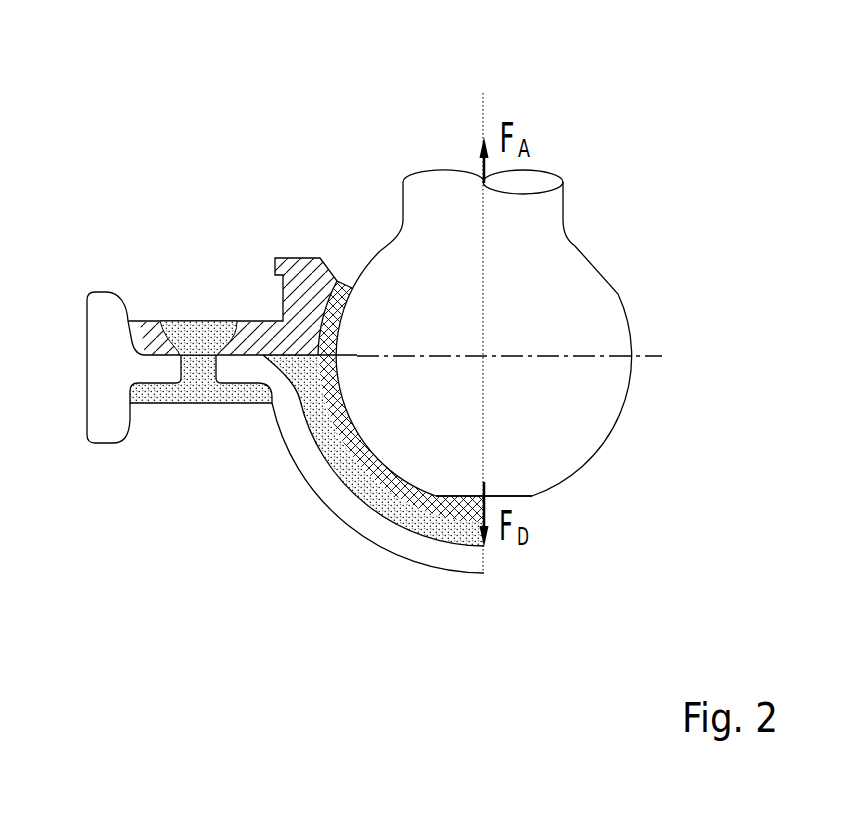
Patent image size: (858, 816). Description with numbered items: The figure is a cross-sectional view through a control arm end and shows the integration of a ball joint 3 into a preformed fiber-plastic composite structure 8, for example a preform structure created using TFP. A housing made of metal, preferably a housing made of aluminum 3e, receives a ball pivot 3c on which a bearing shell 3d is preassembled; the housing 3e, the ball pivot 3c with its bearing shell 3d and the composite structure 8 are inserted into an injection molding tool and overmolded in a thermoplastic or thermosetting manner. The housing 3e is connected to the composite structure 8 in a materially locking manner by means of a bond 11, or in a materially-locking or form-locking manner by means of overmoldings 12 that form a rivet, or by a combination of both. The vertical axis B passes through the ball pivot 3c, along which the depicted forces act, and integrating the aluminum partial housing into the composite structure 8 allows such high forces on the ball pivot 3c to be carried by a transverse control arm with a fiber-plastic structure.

The ball joint 3 is at (612, 148).
The ball pivot 3c is at (538, 425).
The bearing shell 3d is at (365, 452).
The housing made of aluminum 3e is at (302, 282).
The preformed fiber-plastic composite structure 8 is at (342, 490).
The bond 11 is at (158, 403).
The overmoldings 12 is at (198, 345).
The axis B is at (483, 120).